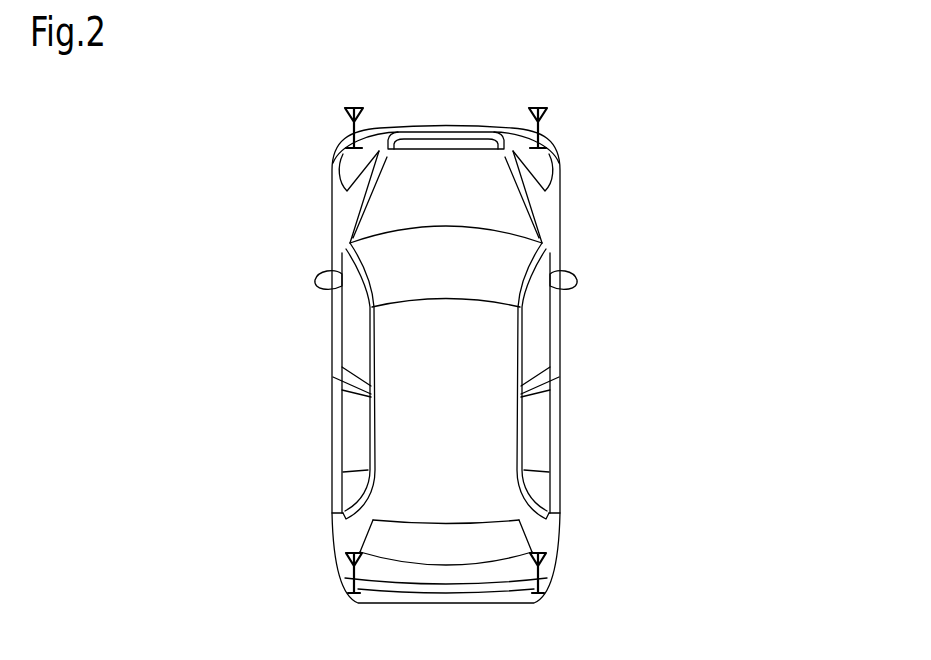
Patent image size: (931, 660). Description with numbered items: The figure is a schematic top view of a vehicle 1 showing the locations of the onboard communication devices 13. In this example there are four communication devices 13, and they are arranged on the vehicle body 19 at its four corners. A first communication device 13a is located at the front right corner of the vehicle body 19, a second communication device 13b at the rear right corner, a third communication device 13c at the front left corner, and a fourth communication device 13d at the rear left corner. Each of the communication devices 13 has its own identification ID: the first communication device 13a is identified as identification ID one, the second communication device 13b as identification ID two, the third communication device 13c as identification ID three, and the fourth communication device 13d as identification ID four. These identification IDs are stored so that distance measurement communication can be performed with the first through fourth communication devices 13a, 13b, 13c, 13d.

The vehicle 1 is at (332, 188).
The vehicle body 19 is at (352, 213).
The communication devices 13 is at (591, 355).
The first communication device 13a is at (541, 134).
The second communication device 13b is at (544, 578).
The third communication device 13c is at (345, 127).
The fourth communication device 13d is at (348, 577).